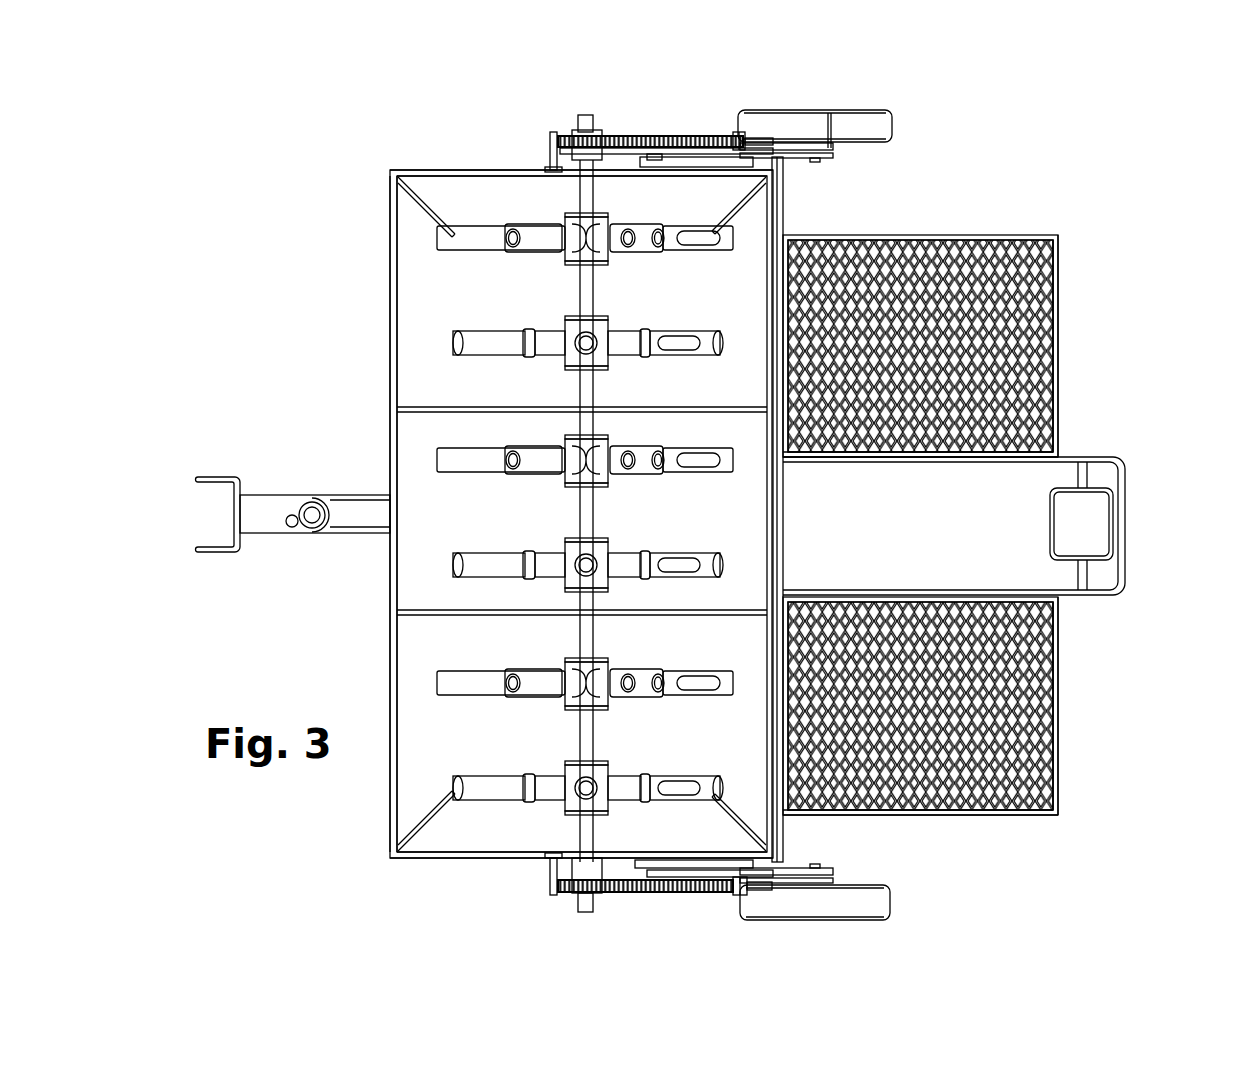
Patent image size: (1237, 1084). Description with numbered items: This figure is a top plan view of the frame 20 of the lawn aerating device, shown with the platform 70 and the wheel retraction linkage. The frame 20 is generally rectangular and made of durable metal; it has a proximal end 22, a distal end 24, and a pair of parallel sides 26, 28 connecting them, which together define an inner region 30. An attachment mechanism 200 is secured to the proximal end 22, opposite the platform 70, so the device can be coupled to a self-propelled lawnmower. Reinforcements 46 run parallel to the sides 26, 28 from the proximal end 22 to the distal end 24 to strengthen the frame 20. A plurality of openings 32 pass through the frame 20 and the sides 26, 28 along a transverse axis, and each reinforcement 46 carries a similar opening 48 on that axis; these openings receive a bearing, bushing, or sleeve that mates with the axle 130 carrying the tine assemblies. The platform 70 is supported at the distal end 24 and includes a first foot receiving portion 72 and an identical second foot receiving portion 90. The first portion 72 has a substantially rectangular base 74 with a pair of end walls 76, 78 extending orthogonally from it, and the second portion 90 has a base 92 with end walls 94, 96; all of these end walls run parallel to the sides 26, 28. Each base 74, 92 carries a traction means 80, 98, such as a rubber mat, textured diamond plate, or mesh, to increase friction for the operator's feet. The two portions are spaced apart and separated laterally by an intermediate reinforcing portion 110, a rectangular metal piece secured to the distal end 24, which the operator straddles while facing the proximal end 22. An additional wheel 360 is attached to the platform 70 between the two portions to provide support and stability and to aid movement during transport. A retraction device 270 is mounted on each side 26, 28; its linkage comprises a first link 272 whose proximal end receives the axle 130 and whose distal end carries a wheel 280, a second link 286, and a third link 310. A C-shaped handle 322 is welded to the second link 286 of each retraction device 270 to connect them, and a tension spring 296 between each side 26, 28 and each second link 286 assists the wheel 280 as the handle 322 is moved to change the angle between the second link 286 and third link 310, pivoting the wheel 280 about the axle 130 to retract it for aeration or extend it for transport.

The frame 20 is at (395, 158).
The proximal end 22 is at (395, 245).
The distal end 24 is at (790, 200).
The side 26 is at (412, 858).
The side 28 is at (475, 167).
The inner region 30 is at (437, 262).
The openings 32 is at (575, 163).
The reinforcement 46 is at (400, 613).
The opening 48 is at (578, 628).
The platform 70 is at (1001, 469).
The first foot receiving portion 72 is at (969, 734).
The base 74 is at (1017, 715).
The end wall 76 is at (1020, 820).
The end wall 78 is at (1055, 598).
The traction means 80 is at (1072, 763).
The second foot receiving portion 90 is at (966, 309).
The base 92 is at (1018, 300).
The end wall 94 is at (1030, 460).
The end wall 96 is at (1035, 238).
The traction means 98 is at (1072, 246).
The intermediate reinforcing portion 110 is at (1140, 511).
The axle 130 is at (590, 113).
The attachment mechanism 200 is at (300, 470).
The retraction device 270 is at (722, 128).
The first link 272 is at (830, 140).
The wheel 280 is at (893, 127).
The second link 286 is at (838, 158).
The tension spring 296 is at (662, 137).
The third link 310 is at (640, 147).
The handle 322 is at (775, 527).
The additional wheel 360 is at (1040, 518).